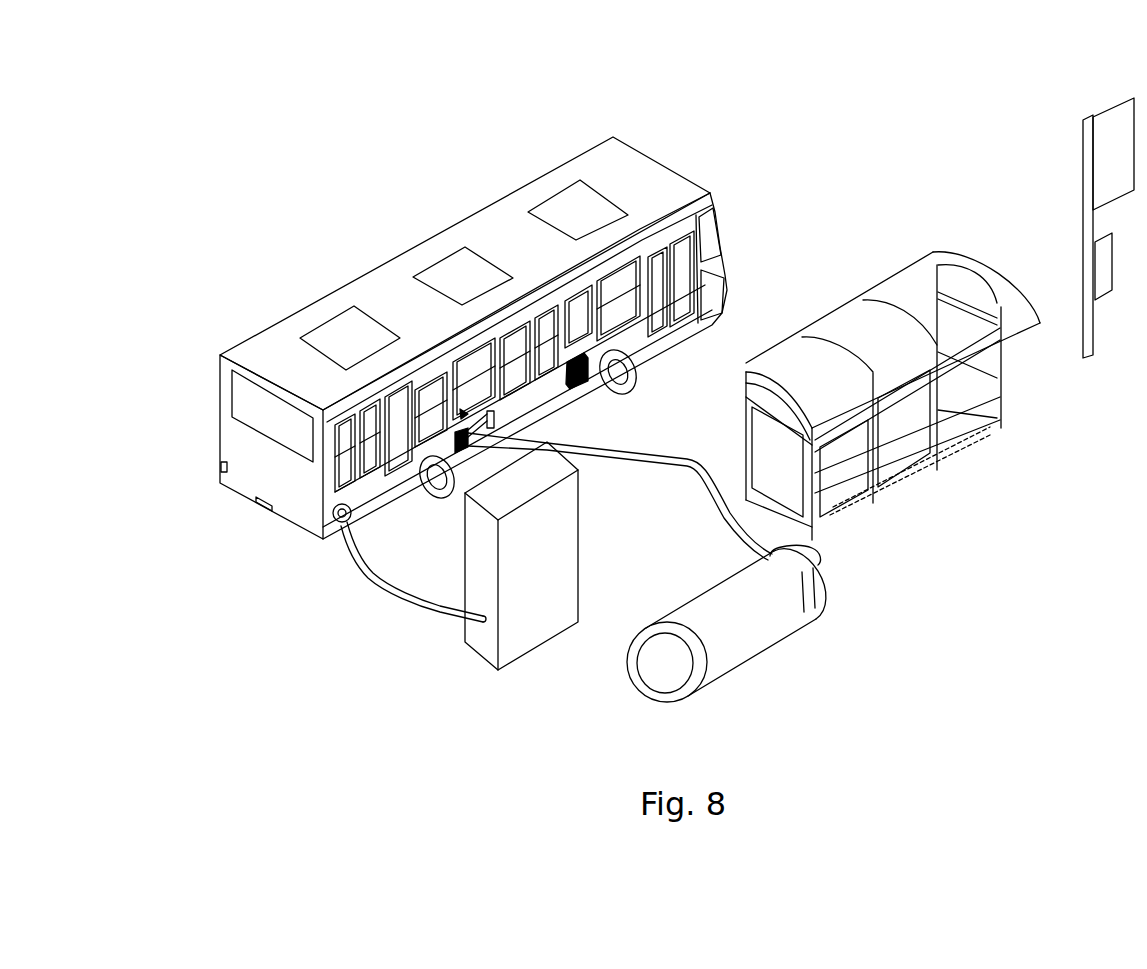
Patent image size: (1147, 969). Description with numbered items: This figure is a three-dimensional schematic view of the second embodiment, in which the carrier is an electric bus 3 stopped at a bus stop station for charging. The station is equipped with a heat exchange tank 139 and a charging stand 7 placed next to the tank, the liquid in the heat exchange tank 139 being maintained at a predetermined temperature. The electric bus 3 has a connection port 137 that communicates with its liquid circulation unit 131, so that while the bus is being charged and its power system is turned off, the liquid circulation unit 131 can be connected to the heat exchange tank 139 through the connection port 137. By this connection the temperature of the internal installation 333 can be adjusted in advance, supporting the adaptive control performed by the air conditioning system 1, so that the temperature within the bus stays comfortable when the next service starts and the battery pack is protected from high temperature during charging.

The air conditioning system 1 is at (453, 427).
The electric bus 3 is at (662, 101).
The charging stand 7 is at (483, 633).
The liquid circulation unit 131 is at (457, 437).
The connection port 137 is at (507, 437).
The heat exchange tank 139 is at (733, 650).
The internal installation 333 is at (590, 367).